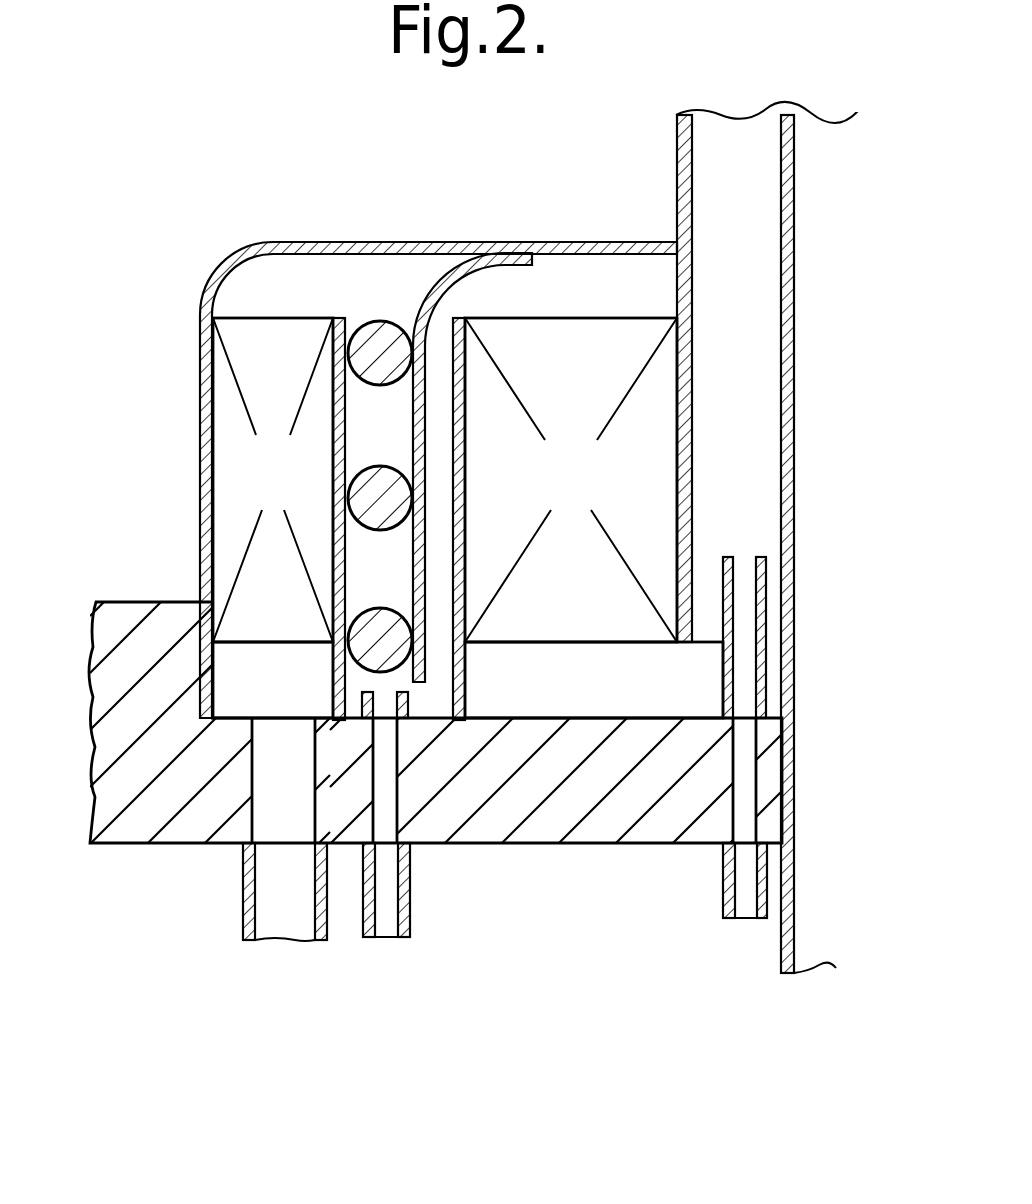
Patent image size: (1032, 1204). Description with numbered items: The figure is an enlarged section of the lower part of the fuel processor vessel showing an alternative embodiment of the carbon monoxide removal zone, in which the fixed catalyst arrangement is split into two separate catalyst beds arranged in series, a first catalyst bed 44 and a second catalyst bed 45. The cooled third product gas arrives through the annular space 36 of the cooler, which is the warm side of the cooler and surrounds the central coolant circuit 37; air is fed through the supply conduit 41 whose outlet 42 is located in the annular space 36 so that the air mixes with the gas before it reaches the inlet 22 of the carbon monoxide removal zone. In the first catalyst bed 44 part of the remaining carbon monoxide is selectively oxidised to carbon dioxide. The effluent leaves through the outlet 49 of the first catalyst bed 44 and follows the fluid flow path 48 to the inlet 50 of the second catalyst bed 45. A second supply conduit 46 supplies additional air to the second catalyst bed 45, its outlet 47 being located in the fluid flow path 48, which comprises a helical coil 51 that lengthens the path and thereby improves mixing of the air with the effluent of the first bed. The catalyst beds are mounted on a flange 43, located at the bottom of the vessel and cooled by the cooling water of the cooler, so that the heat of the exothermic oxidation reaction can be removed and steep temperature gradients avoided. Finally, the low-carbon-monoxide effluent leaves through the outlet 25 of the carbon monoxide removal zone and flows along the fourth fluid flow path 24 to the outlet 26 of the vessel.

The inlet of the carbon monoxide removal zone 22 is at (588, 519).
The fourth fluid flow path 24 is at (280, 790).
The outlet of the carbon monoxide removal zone 25 is at (273, 680).
The outlet of the vessel 26 is at (298, 920).
The annular space 36 is at (750, 410).
The coolant circuit 37 is at (786, 544).
The supply conduit 41 is at (748, 898).
The outlet of the supply conduit 42 is at (745, 622).
The flange 43 is at (634, 800).
The first catalyst bed 44 is at (571, 480).
The second catalyst bed 45 is at (273, 480).
The second supply conduit 46 is at (390, 930).
The outlet of the second supply conduit 47 is at (505, 910).
The fluid flow path 48 is at (375, 562).
The outlet of the first catalyst bed 49 is at (509, 467).
The inlet of the second catalyst bed 50 is at (438, 480).
The helical coil 51 is at (382, 345).